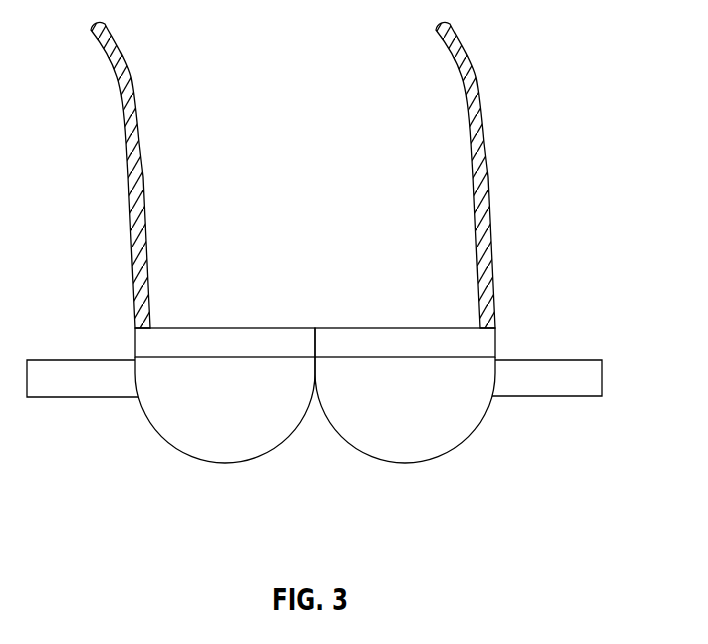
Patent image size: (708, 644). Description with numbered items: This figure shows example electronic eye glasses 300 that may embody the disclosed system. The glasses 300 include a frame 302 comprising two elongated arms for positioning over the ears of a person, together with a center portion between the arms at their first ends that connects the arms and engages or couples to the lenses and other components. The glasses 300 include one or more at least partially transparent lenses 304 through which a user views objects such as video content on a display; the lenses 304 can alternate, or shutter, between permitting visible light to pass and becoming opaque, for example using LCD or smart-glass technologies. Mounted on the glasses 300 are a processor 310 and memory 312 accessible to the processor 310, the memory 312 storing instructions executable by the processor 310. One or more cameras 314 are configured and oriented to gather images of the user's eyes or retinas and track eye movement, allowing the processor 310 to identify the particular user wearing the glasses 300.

The eye glasses 300 is at (567, 112).
The frame 302 is at (117, 53).
The at least partially transparent lenses 304 is at (155, 425).
The processor 310 is at (260, 327).
The memory 312 is at (427, 327).
The cameras 314 is at (92, 388).